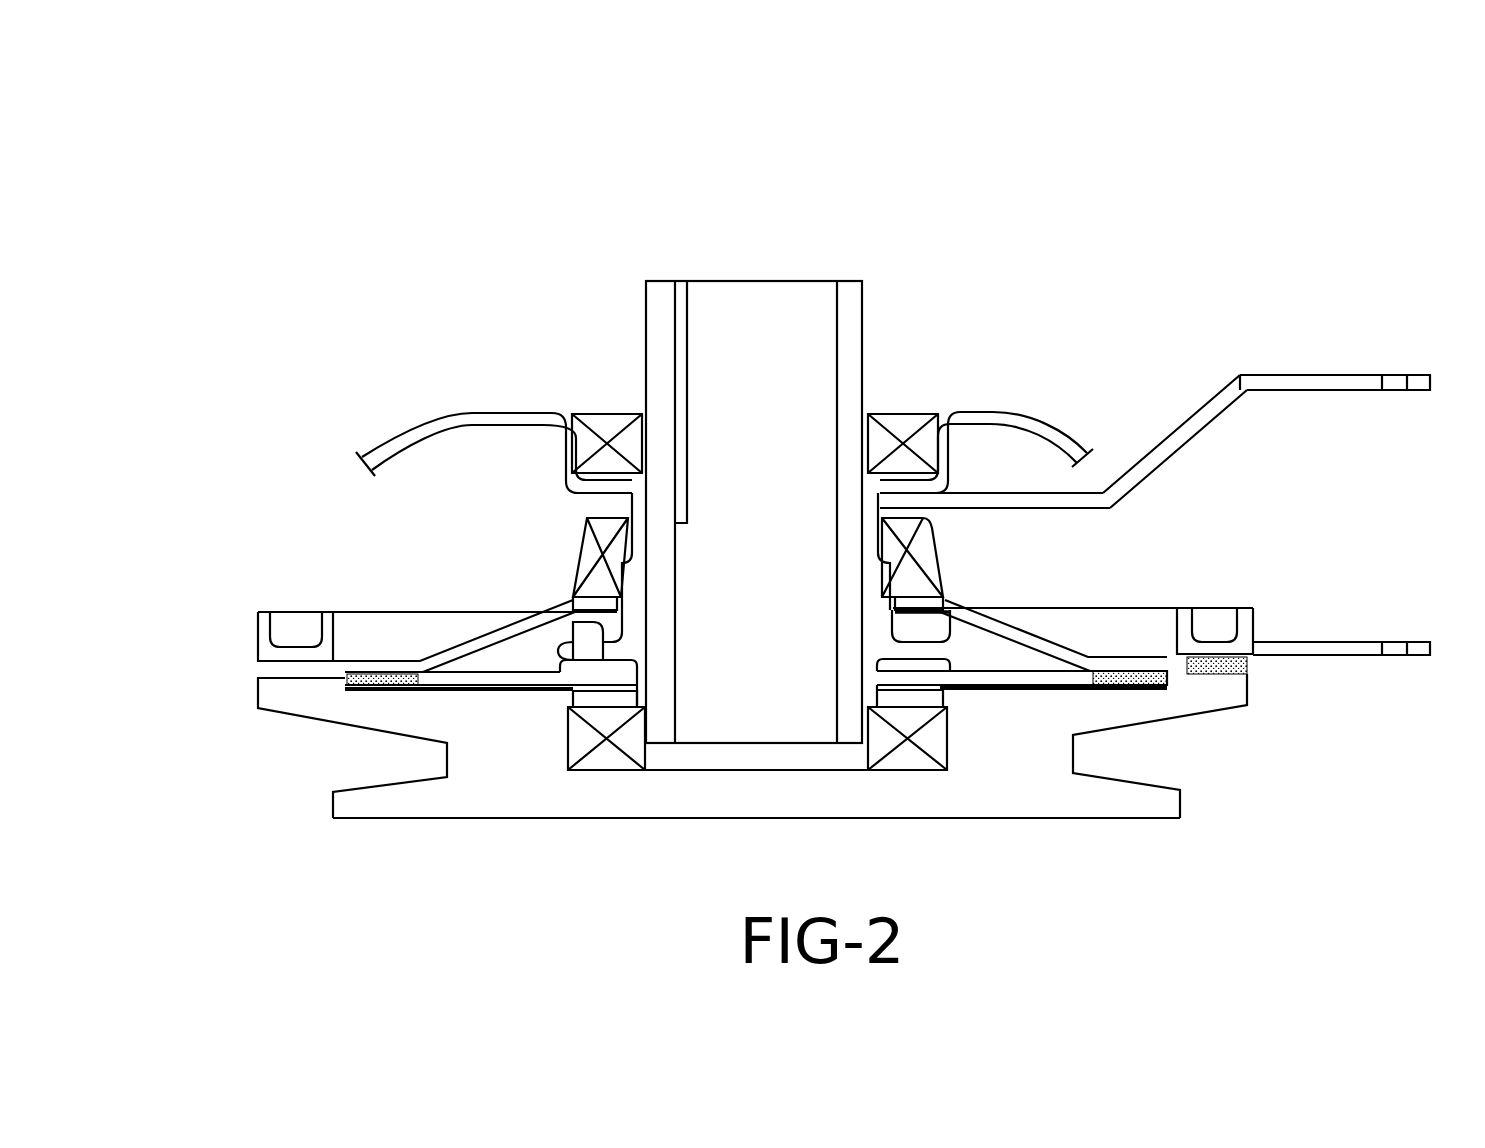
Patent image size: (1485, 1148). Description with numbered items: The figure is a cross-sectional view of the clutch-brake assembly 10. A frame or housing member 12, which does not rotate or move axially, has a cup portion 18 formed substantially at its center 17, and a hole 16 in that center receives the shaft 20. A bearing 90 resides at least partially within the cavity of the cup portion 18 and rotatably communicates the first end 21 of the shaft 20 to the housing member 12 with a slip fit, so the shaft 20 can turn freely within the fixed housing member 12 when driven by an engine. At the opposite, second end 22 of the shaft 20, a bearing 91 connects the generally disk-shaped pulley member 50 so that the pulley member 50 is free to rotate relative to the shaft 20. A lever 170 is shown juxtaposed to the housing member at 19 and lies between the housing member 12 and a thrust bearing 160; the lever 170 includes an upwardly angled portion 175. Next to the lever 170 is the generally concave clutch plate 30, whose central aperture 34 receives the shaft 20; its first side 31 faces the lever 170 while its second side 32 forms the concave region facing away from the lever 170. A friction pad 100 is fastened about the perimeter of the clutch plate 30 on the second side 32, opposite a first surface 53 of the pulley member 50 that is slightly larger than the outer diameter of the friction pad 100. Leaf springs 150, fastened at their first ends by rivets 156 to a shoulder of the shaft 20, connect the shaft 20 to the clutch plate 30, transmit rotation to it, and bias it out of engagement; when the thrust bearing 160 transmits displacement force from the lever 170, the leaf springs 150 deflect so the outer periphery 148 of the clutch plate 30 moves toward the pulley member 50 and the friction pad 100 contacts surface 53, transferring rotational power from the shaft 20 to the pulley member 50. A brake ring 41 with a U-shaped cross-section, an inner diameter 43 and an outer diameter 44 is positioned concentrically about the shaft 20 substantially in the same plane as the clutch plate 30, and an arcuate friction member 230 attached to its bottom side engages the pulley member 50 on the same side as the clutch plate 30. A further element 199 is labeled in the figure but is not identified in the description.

The clutch-brake assembly 10 is at (858, 236).
The housing member 12 is at (958, 473).
The hole 16 is at (865, 473).
The center 17 is at (627, 343).
The cup portion 18 is at (612, 398).
The lever location on housing member 19 is at (990, 440).
The shaft 20 is at (853, 327).
The first end 21 is at (628, 263).
The second end 22 is at (664, 763).
The clutch plate 30 is at (1153, 660).
The first side 31 is at (593, 643).
The second side 32 is at (522, 632).
The aperture 34 is at (627, 633).
The brake ring 41 is at (1103, 623).
The inner diameter 43 is at (1177, 606).
The outer diameter 44 is at (1253, 607).
The pulley member 50 is at (1047, 793).
The first surface 53 is at (418, 690).
The bearing 90 is at (590, 421).
The bearing 91 is at (588, 762).
The friction pad 100 is at (362, 683).
The outer periphery 148 is at (395, 662).
The leaf springs 150 is at (957, 617).
The rivets 156 is at (513, 606).
The thrust bearing 160 is at (585, 535).
The lever 170 is at (1242, 383).
The upwardly angled portion 175 is at (1167, 447).
The shaft sleeve 199 is at (679, 287).
The friction member 230 is at (1250, 668).